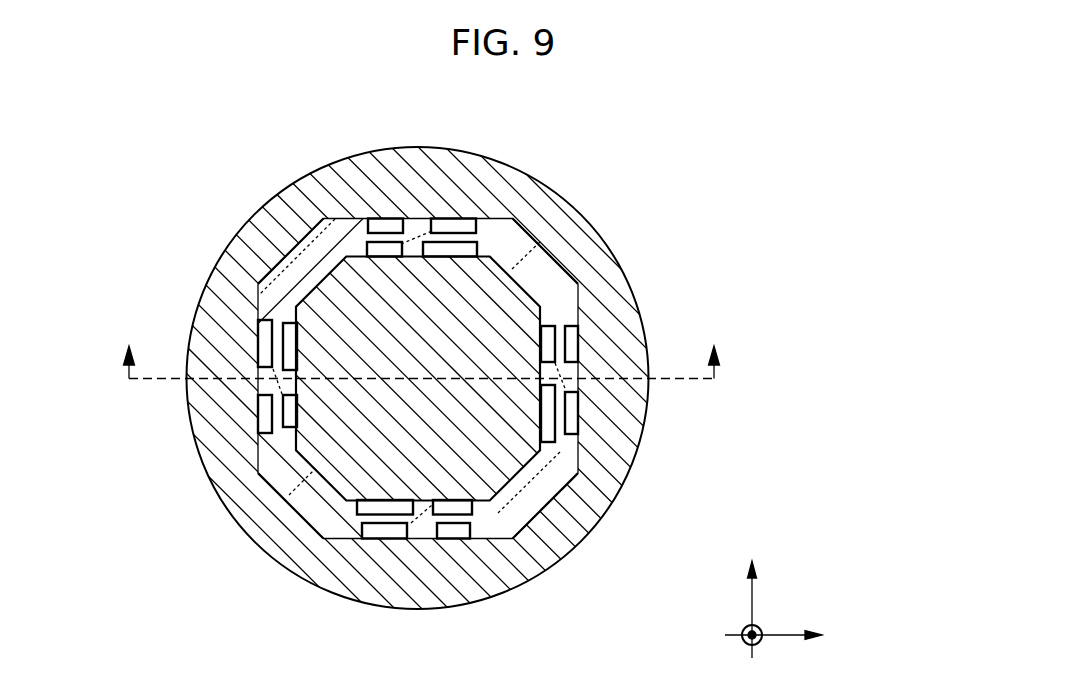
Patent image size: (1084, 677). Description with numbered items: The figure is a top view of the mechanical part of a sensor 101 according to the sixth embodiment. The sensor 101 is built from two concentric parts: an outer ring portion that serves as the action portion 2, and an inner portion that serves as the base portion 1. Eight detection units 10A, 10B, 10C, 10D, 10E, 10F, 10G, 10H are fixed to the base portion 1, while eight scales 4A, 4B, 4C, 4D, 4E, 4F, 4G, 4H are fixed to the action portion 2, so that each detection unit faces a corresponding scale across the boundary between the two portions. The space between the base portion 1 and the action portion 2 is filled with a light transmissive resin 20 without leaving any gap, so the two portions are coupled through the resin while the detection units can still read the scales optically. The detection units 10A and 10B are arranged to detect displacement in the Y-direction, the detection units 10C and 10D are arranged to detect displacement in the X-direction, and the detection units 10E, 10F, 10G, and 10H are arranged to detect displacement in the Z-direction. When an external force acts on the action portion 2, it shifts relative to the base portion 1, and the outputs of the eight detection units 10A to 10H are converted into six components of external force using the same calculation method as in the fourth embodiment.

The sensor 101 is at (785, 106).
The base portion 1 is at (530, 298).
The action portion 2 is at (572, 195).
The light transmissive resin 20 is at (303, 255).
The scale 4A is at (573, 338).
The scale 4B is at (263, 403).
The scale 4C is at (390, 222).
The scale 4D is at (452, 532).
The scale 4E is at (573, 405).
The scale 4F is at (263, 350).
The scale 4G is at (451, 222).
The scale 4H is at (377, 532).
The detection unit 10A is at (548, 338).
The detection unit 10B is at (287, 428).
The detection unit 10C is at (367, 252).
The detection unit 10D is at (465, 510).
The detection unit 10E is at (553, 432).
The detection unit 10F is at (287, 323).
The detection unit 10G is at (480, 250).
The detection unit 10H is at (363, 508).